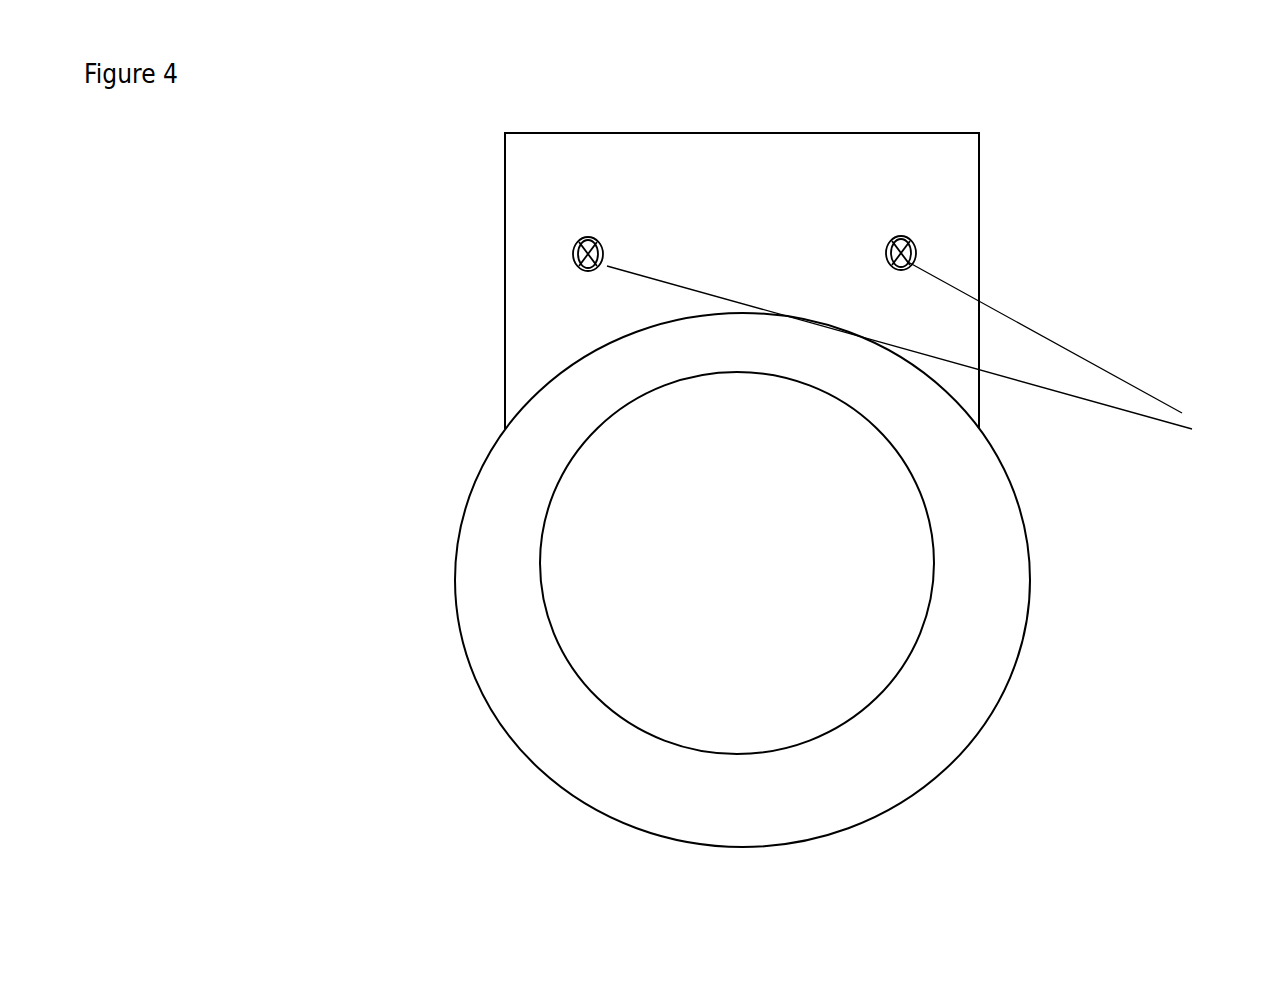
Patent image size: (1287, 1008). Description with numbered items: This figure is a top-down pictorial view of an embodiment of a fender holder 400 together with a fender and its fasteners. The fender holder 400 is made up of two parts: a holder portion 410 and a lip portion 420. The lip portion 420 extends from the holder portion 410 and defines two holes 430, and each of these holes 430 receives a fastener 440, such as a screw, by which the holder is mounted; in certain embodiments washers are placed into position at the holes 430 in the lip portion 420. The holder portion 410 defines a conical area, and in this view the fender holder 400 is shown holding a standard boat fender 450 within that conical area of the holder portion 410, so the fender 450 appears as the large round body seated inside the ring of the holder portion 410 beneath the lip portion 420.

The fender holder 400 is at (260, 244).
The holder portion 410 is at (455, 547).
The lip portion 420 is at (505, 281).
The holes 430 is at (891, 241).
The fastener 440 is at (924, 354).
The standard boat fender 450 is at (847, 505).